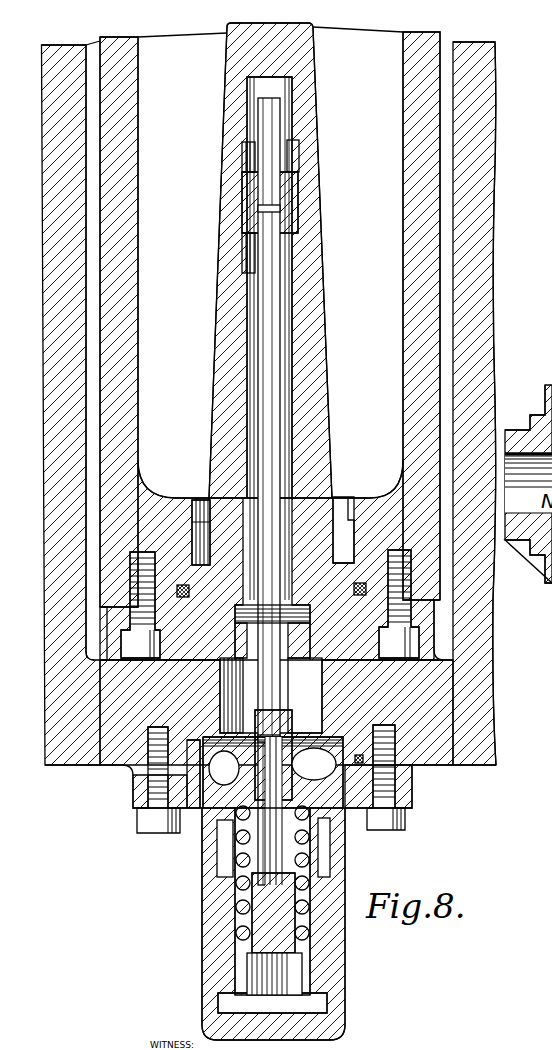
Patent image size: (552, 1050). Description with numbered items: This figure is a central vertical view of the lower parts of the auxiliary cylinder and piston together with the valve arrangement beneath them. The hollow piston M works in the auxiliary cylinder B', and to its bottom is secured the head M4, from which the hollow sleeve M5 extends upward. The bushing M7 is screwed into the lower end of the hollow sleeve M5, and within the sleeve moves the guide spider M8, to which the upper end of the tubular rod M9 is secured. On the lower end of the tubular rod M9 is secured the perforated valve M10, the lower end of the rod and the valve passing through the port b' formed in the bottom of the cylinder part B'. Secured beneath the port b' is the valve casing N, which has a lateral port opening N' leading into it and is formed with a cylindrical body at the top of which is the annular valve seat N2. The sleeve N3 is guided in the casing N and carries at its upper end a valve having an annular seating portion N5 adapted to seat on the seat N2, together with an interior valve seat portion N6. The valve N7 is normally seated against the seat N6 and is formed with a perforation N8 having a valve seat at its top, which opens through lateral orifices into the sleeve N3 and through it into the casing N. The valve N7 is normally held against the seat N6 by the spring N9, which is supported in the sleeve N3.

The auxiliary cylinder B' is at (285, 396).
The piston M is at (133, 338).
The head M4 is at (438, 617).
The hollow sleeve M5 is at (318, 332).
The bushing M7 is at (359, 663).
The guide spider M8 is at (300, 183).
The tubular rod M9 is at (276, 293).
The perforated valve M10 is at (271, 702).
The port b' is at (265, 757).
The valve casing N is at (289, 924).
The lateral port opening N' is at (313, 848).
The annular valve seat N2 is at (412, 773).
The sleeve N3 is at (308, 867).
The annular seating portion N5 is at (140, 813).
The interior valve seat portion N6 is at (410, 800).
The valve N7 is at (201, 850).
The perforation N8 is at (275, 815).
The spring N9 is at (240, 900).